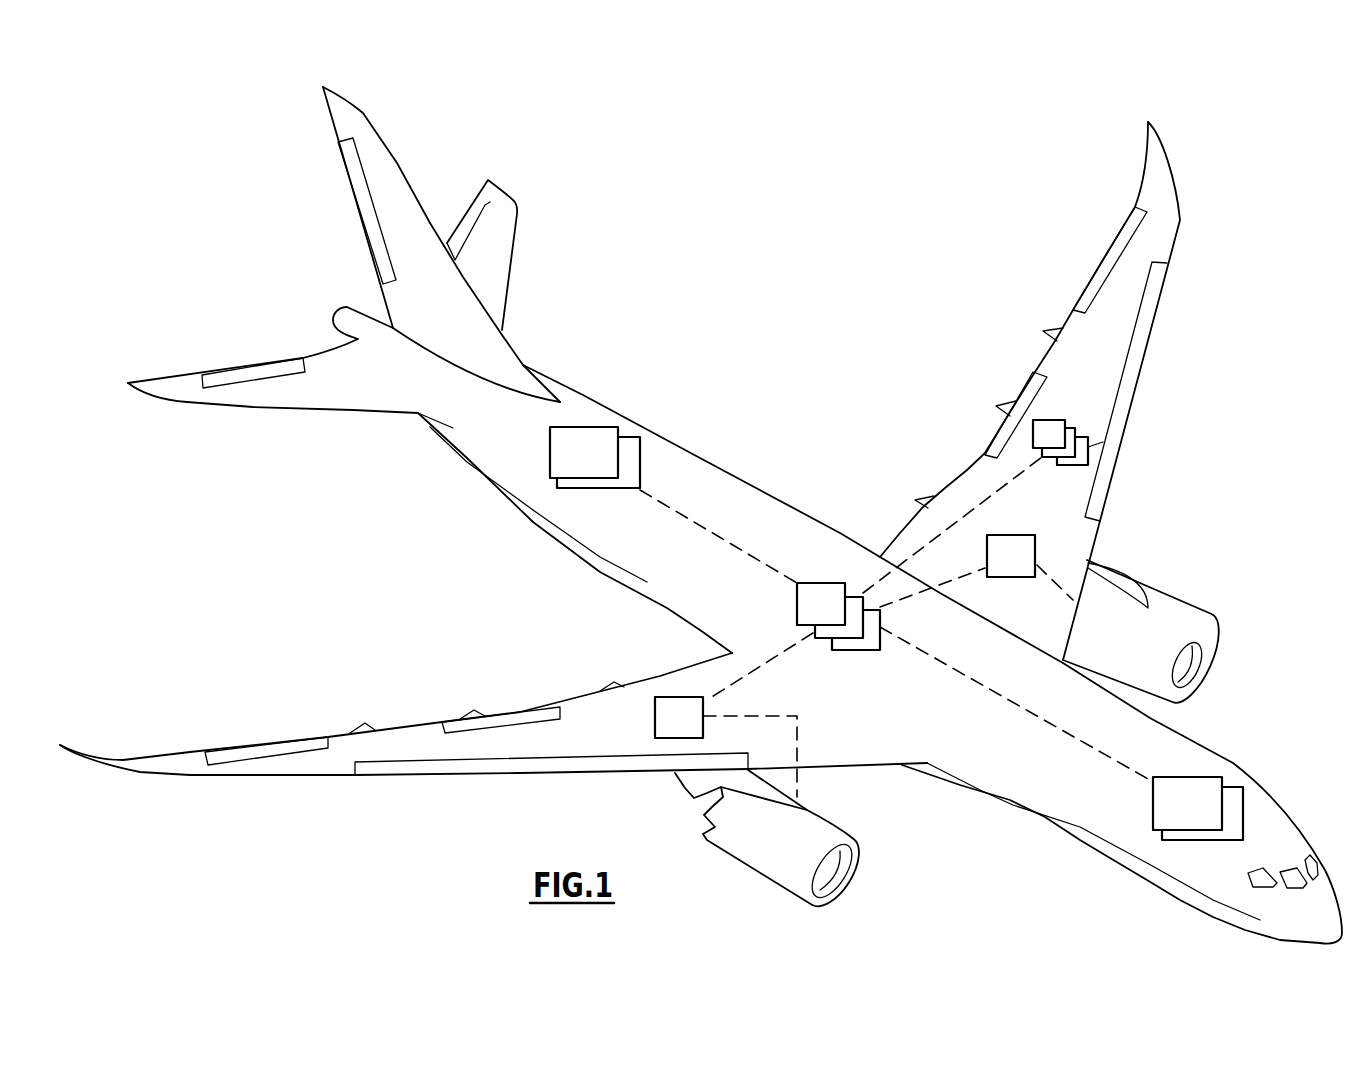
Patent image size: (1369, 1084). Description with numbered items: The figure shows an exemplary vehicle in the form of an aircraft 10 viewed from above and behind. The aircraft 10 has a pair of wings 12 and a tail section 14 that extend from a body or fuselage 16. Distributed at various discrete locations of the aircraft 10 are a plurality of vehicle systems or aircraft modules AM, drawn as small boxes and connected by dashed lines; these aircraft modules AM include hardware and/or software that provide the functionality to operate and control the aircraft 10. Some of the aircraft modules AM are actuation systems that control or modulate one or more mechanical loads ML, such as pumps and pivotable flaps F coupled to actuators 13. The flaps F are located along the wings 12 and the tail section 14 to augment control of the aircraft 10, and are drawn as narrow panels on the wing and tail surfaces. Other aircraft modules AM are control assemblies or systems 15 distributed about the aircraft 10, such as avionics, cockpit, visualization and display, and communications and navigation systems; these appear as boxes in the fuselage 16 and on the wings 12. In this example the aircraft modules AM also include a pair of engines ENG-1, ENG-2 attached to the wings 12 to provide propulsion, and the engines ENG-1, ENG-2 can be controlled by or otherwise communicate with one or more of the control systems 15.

The aircraft 10 is at (224, 107).
The wings 12 is at (307, 779).
The actuators 13 is at (1060, 467).
The tail section 14 is at (437, 176).
The control systems 15 is at (822, 641).
The fuselage 16 is at (757, 487).
The aircraft modules AM is at (632, 437).
The mechanical loads ML is at (263, 385).
The flaps F is at (353, 200).
The first engine ENG-1 is at (787, 898).
The second engine ENG-2 is at (1207, 622).